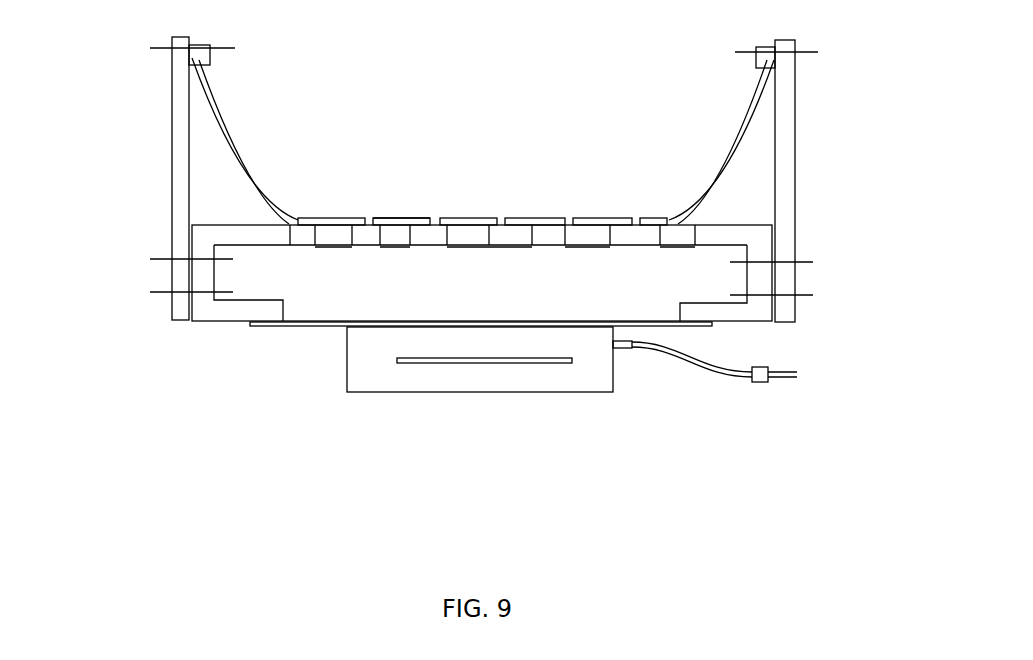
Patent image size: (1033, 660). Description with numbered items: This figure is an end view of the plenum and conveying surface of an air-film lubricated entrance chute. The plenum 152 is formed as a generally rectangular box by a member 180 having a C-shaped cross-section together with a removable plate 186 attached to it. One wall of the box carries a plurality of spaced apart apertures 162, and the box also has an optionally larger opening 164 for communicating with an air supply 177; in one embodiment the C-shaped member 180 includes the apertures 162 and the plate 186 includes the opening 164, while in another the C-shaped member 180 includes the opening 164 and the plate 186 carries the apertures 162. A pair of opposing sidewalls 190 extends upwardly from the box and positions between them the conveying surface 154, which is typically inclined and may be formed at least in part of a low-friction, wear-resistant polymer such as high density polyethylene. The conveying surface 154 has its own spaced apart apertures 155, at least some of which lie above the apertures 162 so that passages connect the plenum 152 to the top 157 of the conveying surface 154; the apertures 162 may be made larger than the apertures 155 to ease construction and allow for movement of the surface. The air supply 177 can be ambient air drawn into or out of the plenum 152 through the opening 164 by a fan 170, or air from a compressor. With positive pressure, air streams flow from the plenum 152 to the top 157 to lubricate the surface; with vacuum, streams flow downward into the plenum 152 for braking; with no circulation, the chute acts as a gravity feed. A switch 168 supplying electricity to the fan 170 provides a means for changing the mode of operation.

The plenum 152 is at (298, 277).
The conveying surface 154 is at (747, 124).
The apertures 155 is at (363, 227).
The top of conveying surface 157 is at (407, 218).
The apertures 162 is at (428, 230).
The opening 164 is at (413, 324).
The switch 168 is at (762, 382).
The fan 170 is at (400, 360).
The air supply 177 is at (503, 459).
The member having a C-shaped cross-section 180 is at (763, 245).
The removable plate 186 is at (713, 330).
The sidewalls 190 is at (175, 143).